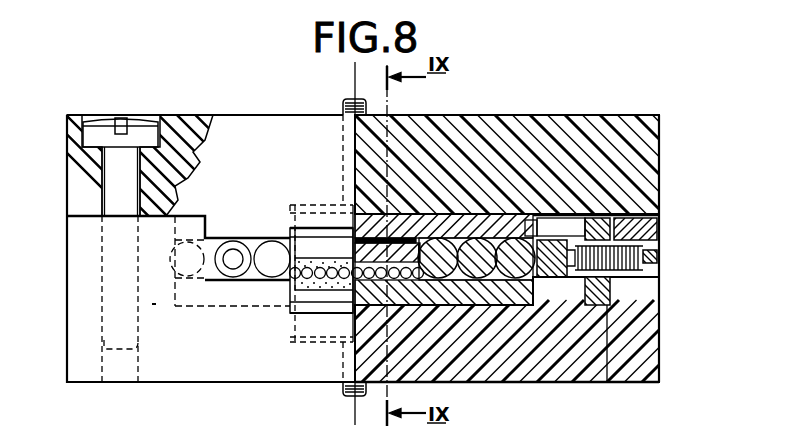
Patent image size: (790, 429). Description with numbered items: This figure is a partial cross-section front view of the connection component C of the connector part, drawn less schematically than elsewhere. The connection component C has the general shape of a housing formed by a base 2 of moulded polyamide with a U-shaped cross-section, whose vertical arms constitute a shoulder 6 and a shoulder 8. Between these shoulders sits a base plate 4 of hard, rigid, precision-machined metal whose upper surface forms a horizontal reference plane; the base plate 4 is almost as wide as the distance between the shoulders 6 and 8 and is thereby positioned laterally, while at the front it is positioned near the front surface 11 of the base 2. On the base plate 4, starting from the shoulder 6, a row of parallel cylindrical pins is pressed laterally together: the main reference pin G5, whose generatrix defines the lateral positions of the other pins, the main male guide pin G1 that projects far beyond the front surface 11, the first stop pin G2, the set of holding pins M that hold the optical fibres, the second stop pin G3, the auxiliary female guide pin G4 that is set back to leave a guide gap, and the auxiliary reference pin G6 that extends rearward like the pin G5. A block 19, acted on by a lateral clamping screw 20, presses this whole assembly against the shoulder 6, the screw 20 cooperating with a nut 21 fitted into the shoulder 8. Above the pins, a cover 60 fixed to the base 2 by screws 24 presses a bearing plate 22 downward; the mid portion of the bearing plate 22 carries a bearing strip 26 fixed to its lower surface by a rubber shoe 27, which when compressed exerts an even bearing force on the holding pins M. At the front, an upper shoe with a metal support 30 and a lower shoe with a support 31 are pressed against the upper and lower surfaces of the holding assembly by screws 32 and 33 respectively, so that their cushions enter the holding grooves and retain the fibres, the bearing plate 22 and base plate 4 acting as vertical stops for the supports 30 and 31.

The base 2 is at (236, 383).
The base plate 4 is at (518, 300).
The shoulder 6 is at (157, 233).
The shoulder 8 is at (640, 215).
The front surface 11 is at (184, 337).
The block 19 is at (546, 300).
The lateral clamping screw 20 is at (657, 258).
The nut 21 is at (605, 300).
The bearing plate 22 is at (528, 242).
The screw 24 is at (107, 133).
The bearing strip 26 is at (362, 250).
The rubber shoe 27 is at (370, 226).
The metal support 30 is at (300, 225).
The support 31 is at (308, 298).
The screw 32 is at (343, 112).
The screw 33 is at (343, 388).
The cover 60 is at (180, 133).
The connection component C is at (617, 114).
The holding pins M is at (335, 272).
The main male guide pin G1 is at (233, 263).
The first stop pin G2 is at (258, 240).
The second stop pin G3 is at (440, 240).
The auxiliary female guide pin G4 is at (475, 240).
The main reference pin G5 is at (217, 238).
The auxiliary reference pin G6 is at (505, 240).